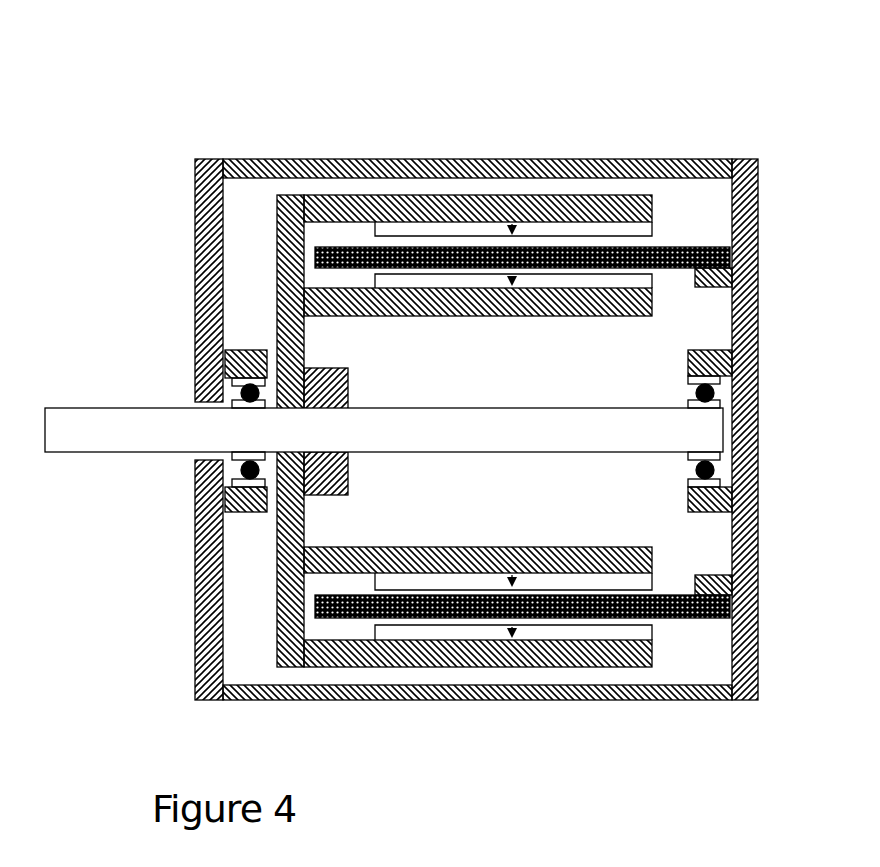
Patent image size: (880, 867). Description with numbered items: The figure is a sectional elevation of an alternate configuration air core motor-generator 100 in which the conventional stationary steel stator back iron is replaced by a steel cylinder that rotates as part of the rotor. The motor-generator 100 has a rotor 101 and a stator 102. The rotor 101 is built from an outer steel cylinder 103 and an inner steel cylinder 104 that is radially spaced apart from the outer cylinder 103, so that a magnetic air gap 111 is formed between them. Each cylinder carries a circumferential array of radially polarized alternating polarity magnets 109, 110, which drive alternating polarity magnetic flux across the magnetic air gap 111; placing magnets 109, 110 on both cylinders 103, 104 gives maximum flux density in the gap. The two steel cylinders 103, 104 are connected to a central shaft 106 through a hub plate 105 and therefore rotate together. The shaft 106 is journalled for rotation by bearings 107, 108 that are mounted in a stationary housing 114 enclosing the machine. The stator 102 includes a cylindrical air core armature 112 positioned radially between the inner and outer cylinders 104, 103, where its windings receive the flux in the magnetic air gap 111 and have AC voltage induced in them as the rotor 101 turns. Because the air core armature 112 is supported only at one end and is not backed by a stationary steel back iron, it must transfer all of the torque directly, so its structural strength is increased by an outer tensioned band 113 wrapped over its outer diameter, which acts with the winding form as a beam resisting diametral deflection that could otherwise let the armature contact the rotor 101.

The air core motor-generator 100 is at (211, 96).
The rotor 101 is at (266, 260).
The stator 102 is at (703, 235).
The outer steel cylinder 103 is at (601, 195).
The inner steel cylinder 104 is at (592, 316).
The hub plate 105 is at (307, 334).
The central shaft 106 is at (438, 410).
The bearing 107 is at (688, 384).
The bearing 108 is at (232, 373).
The magnets 109 is at (375, 586).
The magnets 110 is at (375, 631).
The magnetic air gap 111 is at (662, 629).
The air core armature 112 is at (675, 592).
The tensioned band 113 is at (672, 270).
The stationary housing 114 is at (760, 318).